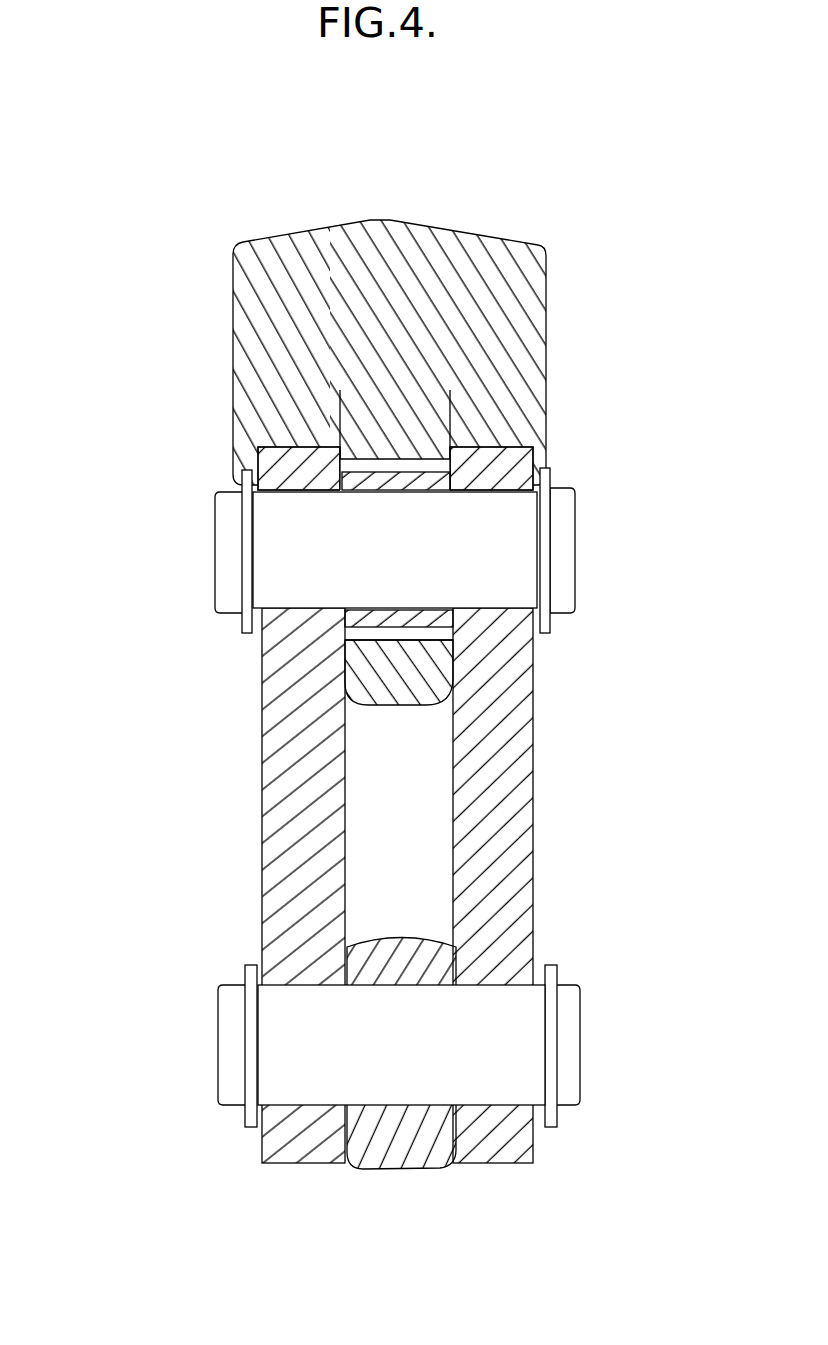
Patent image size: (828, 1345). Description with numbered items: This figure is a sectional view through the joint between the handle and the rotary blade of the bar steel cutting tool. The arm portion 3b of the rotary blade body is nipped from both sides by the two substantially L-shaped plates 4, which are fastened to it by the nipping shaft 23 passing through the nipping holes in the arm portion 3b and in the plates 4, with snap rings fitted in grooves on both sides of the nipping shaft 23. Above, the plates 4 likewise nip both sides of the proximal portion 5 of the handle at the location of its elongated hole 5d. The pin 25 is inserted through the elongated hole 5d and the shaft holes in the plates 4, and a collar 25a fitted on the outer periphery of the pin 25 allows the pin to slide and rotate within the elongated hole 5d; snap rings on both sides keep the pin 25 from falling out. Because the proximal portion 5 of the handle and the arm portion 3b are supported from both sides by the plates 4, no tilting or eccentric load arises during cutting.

The proximal portion of the handle 5 is at (275, 360).
The elongated hole 5d is at (400, 463).
The collar 25a is at (400, 483).
The pin 25 is at (228, 547).
The plate 4 is at (297, 812).
The nipping shaft 23 is at (233, 1050).
The arm portion 3b is at (402, 1140).